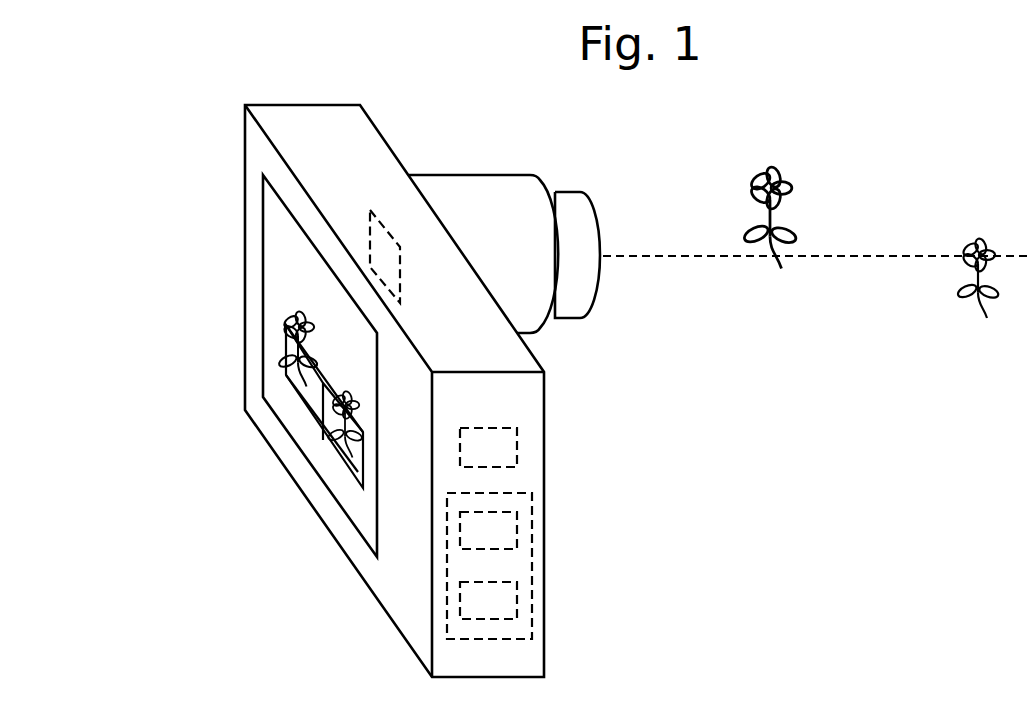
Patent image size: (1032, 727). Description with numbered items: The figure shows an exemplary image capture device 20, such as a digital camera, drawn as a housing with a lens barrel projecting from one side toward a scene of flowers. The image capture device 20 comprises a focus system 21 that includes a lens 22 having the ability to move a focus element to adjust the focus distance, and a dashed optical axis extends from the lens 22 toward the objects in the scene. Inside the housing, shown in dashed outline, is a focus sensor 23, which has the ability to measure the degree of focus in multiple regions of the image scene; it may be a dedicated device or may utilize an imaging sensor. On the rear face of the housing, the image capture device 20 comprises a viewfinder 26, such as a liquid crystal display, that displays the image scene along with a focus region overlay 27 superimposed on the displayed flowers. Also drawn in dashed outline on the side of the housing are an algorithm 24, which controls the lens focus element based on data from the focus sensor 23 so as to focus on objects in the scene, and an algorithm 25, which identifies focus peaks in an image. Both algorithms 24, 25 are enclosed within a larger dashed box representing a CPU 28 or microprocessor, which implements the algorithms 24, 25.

The image capture device 20 is at (283, 104).
The focus system 21 is at (633, 325).
The lens 22 is at (497, 175).
The focus sensor 23 is at (372, 210).
The algorithm 24 is at (475, 542).
The algorithm 25 is at (475, 612).
The viewfinder 26 is at (264, 240).
The focus region overlay 27 is at (312, 417).
The CPU 28 is at (532, 558).